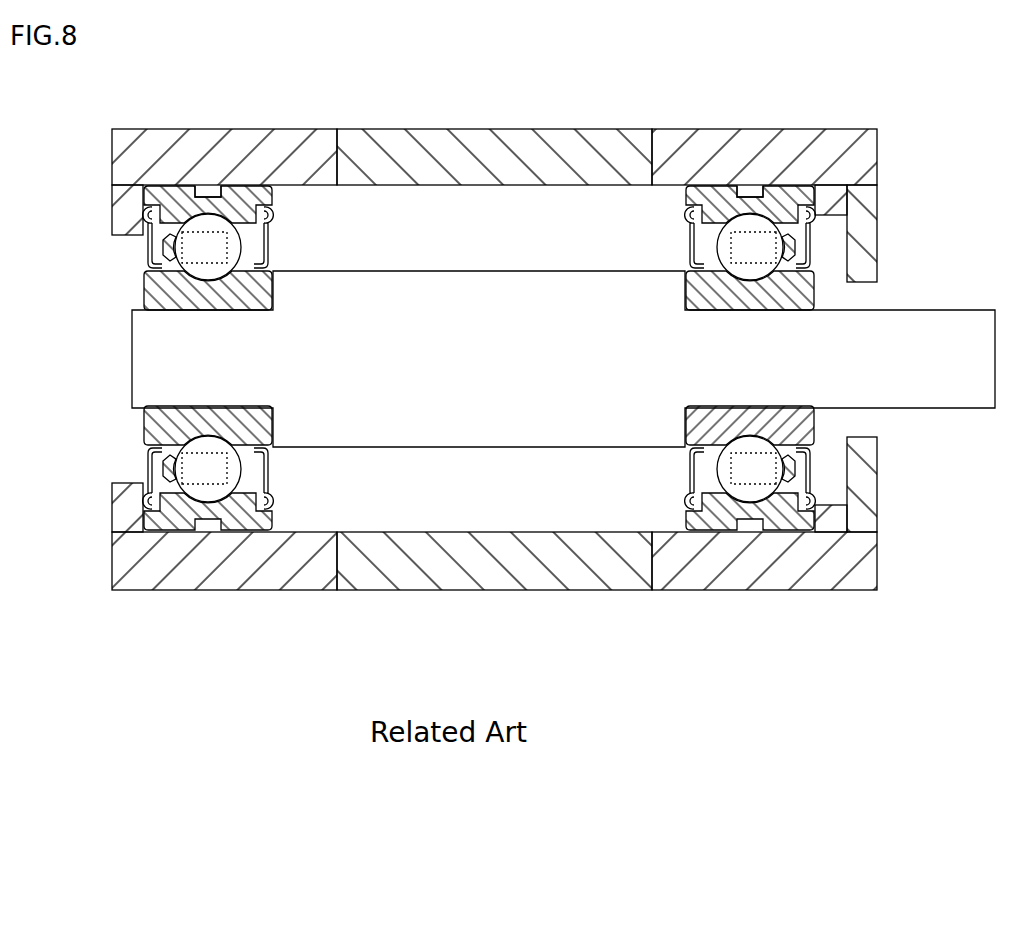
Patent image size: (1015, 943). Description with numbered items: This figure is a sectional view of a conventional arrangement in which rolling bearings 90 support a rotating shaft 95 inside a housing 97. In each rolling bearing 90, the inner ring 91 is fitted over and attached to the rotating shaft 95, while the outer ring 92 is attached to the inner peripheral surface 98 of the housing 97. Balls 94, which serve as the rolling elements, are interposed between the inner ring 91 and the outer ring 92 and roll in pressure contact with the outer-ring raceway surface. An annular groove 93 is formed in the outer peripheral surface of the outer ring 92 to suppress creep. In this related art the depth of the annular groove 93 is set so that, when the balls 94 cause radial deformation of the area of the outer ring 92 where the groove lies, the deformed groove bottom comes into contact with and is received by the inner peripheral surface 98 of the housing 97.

The rolling bearing 90 is at (477, 520).
The inner ring 91 is at (148, 422).
The outer ring 92 is at (172, 520).
The annular groove 93 is at (211, 186).
The balls 94 is at (233, 247).
The rotating shaft 95 is at (920, 330).
The housing 97 is at (284, 150).
The inner peripheral surface 98 is at (234, 525).